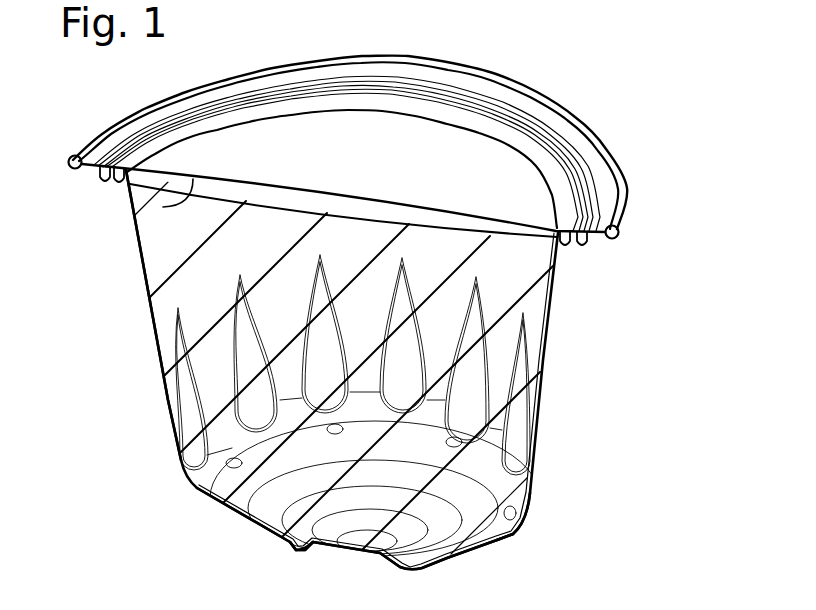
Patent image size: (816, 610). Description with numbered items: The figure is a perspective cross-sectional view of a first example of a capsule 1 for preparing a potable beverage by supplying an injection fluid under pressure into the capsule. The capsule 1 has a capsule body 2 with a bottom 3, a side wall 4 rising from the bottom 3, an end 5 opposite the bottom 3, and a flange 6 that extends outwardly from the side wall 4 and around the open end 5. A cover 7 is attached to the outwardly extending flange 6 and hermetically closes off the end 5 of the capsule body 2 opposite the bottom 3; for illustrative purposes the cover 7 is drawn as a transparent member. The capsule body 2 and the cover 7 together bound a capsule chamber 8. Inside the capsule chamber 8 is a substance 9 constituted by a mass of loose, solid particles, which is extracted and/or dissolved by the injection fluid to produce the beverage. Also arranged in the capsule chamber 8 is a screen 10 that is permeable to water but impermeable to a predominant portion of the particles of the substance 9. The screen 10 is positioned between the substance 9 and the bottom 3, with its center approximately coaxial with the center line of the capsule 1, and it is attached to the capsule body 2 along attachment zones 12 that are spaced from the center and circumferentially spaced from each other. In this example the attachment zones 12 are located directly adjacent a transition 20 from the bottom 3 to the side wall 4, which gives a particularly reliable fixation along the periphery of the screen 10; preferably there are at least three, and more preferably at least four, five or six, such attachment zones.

The capsule 1 is at (563, 83).
The capsule body 2 is at (141, 292).
The bottom 3 is at (227, 513).
The side wall 4 is at (160, 360).
The end 5 is at (447, 113).
The flange 6 is at (623, 183).
The cover 7 is at (163, 207).
The capsule chamber 8 is at (508, 228).
The substance 9 is at (332, 130).
The screen 10 is at (296, 538).
The attachment zones 12 is at (231, 464).
The transition 20 is at (513, 538).